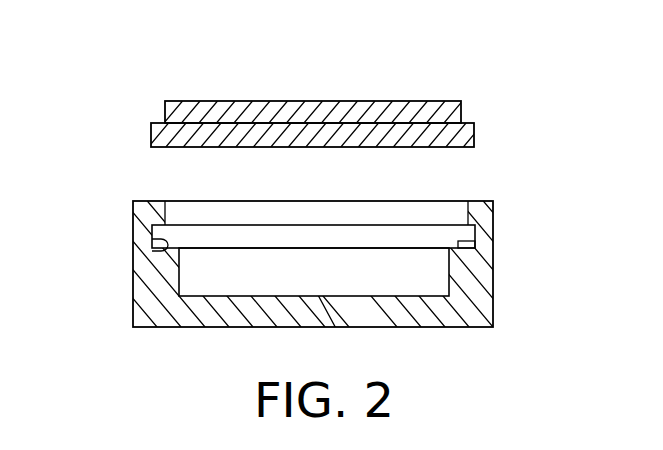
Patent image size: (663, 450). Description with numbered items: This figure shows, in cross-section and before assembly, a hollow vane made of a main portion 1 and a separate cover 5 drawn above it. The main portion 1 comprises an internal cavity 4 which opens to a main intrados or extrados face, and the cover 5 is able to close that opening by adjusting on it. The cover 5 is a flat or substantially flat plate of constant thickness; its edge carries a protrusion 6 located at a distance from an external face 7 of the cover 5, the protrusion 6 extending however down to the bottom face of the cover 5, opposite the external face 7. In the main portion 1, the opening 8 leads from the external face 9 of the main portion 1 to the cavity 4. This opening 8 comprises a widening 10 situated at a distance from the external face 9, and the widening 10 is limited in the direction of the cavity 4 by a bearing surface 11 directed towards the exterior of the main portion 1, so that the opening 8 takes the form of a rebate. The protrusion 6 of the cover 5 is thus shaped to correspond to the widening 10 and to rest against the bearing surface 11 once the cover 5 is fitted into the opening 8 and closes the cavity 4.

The main portion 1 is at (112, 304).
The internal cavity 4 is at (302, 285).
The cover 5 is at (333, 75).
The protrusion 6 is at (462, 137).
The external face of the cover 7 is at (370, 100).
The opening 8 is at (353, 224).
The external face of the main portion 9 is at (153, 201).
The widening 10 is at (161, 253).
The bearing surface 11 is at (458, 247).